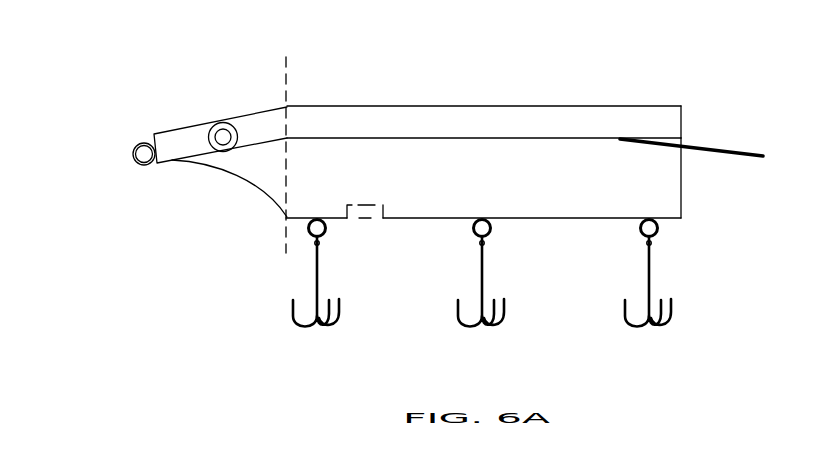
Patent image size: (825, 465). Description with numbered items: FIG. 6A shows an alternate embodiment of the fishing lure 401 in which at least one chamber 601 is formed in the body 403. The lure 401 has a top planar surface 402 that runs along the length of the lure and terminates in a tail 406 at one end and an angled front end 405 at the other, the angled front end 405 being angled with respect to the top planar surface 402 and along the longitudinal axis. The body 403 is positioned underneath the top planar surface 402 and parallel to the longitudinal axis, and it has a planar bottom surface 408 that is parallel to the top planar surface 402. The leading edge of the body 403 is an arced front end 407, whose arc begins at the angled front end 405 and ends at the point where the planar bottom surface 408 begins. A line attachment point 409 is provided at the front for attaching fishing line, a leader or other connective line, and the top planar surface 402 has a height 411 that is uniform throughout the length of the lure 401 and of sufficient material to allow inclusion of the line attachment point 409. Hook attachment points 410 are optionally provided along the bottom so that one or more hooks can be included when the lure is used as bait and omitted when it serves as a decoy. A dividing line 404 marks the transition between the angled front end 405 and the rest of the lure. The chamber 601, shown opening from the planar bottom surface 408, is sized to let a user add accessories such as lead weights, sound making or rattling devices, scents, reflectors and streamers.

The fishing lure 401 is at (492, 70).
The top planar surface 402 is at (610, 107).
The body 403 is at (682, 188).
The dividing line 404 is at (287, 64).
The angled front end 405 is at (177, 128).
The tail 406 is at (748, 148).
The arced front end 407 is at (253, 181).
The planar bottom surface 408 is at (560, 220).
The line attachment point 409 is at (134, 147).
The hook attachment points 410 is at (312, 234).
The height 411 is at (682, 120).
The chamber 601 is at (365, 222).